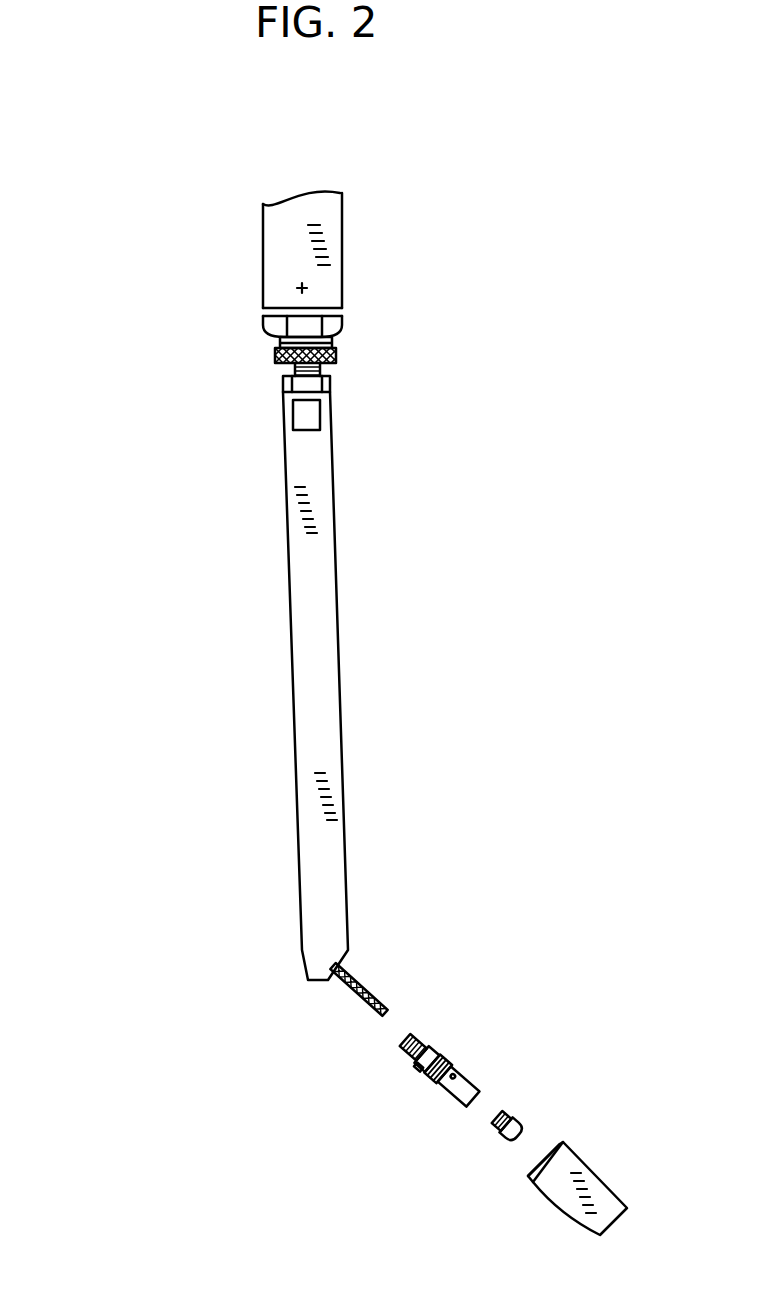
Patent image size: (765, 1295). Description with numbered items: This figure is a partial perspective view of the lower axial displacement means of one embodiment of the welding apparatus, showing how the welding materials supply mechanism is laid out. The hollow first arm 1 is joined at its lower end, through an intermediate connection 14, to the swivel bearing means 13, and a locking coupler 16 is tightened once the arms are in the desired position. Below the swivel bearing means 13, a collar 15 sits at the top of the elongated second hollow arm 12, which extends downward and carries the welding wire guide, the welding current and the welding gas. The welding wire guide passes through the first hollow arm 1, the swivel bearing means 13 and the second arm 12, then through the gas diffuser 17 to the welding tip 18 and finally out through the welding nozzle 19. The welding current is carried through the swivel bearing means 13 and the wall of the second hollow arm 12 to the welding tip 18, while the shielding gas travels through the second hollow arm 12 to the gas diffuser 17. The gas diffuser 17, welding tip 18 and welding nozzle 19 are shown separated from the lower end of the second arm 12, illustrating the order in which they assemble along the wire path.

The hollow first arm 1 is at (283, 243).
The second arm 12 is at (328, 658).
The swivel bearing means 13 is at (268, 362).
The neck connection 14 is at (343, 315).
The collar 15 is at (323, 382).
The locking coupler 16 is at (338, 354).
The gas diffuser 17 is at (434, 1046).
The welding tip 18 is at (505, 1142).
The welding nozzle 19 is at (580, 1163).